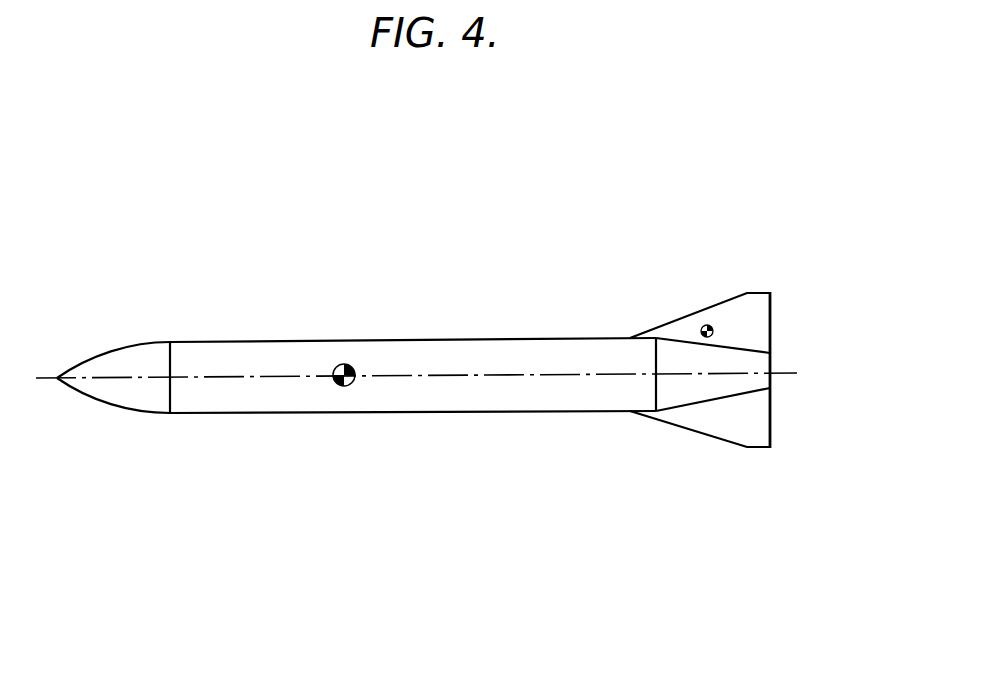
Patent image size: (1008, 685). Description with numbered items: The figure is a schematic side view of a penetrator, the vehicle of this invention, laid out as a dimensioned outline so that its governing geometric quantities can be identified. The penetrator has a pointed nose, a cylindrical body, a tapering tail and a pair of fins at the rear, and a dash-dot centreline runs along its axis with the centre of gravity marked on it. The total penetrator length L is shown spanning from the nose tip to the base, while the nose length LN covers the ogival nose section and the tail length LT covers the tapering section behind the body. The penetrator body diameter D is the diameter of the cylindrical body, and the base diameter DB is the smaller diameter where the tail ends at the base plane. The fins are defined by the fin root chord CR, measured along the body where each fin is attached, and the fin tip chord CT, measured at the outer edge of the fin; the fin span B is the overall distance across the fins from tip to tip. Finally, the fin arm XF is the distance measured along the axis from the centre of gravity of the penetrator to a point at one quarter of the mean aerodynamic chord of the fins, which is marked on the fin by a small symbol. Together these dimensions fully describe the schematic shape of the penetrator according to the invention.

The total penetrator length L is at (58, 385).
The nose length LN is at (170, 420).
The tail length LT is at (657, 415).
The penetrator body diameter D is at (509, 290).
The fin arm XF is at (707, 308).
The fin root chord CR is at (627, 338).
The fin tip chord CT is at (724, 253).
The fin span B is at (775, 293).
The base diameter DB is at (845, 328).